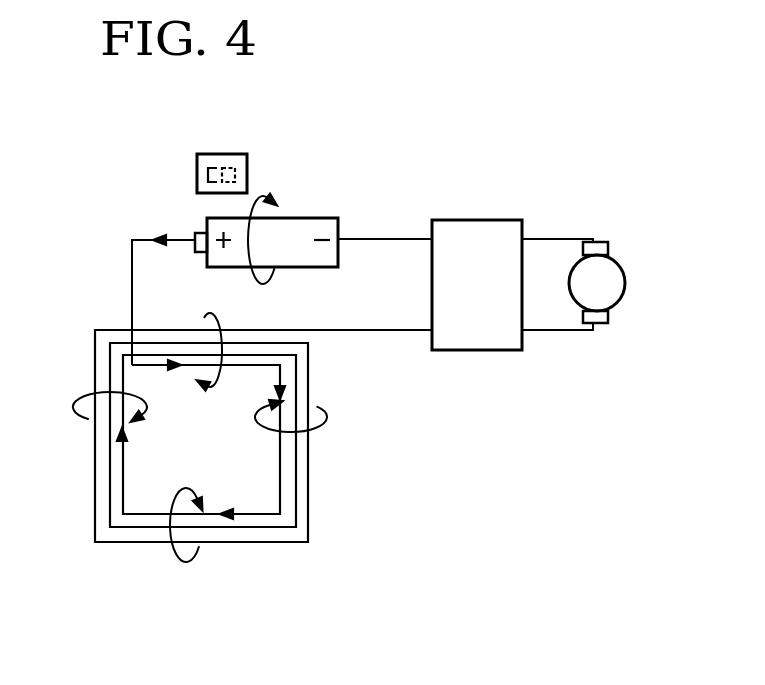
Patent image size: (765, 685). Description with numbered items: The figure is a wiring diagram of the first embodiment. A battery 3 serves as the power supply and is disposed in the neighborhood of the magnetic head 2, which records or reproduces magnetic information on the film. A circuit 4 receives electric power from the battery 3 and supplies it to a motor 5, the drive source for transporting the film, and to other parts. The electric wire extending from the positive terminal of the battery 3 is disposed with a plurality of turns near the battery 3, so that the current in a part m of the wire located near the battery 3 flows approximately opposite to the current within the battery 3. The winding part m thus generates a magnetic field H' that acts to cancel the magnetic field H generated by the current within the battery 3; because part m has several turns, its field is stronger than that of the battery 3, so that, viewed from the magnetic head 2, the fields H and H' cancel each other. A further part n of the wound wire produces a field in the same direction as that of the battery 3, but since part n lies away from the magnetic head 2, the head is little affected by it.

The magnetic head 2 is at (247, 166).
The battery 3 is at (340, 227).
The circuit 4 is at (507, 219).
The motor 5 is at (620, 267).
The magnetic field H is at (316, 216).
The magnetic field H' is at (205, 425).
The part of the electric wire m is at (177, 312).
The part of the electric wire n is at (158, 548).